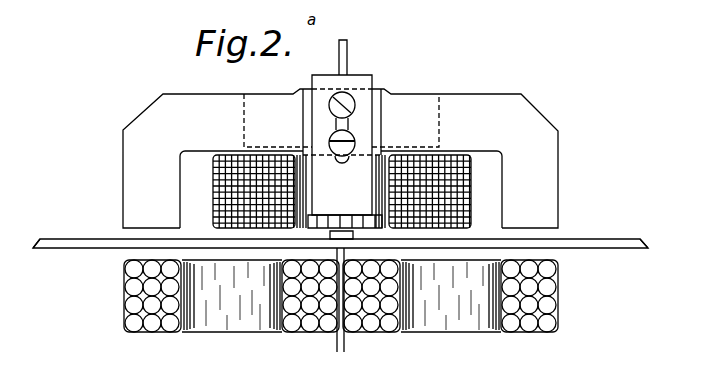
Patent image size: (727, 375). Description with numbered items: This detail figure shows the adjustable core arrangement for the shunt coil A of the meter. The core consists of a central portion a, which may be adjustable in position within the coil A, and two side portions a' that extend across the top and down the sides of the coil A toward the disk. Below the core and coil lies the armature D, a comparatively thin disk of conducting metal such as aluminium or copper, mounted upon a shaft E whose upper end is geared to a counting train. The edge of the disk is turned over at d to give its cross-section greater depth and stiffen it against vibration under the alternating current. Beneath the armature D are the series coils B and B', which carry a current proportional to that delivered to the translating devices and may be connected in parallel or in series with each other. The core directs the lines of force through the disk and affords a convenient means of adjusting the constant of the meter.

The central portion of core a is at (345, 157).
The side portions of core a' is at (340, 158).
The shunt coil A is at (470, 188).
The shaft E is at (348, 57).
The armature D is at (107, 233).
The turned-over edge d is at (654, 244).
The series coil B is at (207, 296).
The series coil B' is at (467, 296).